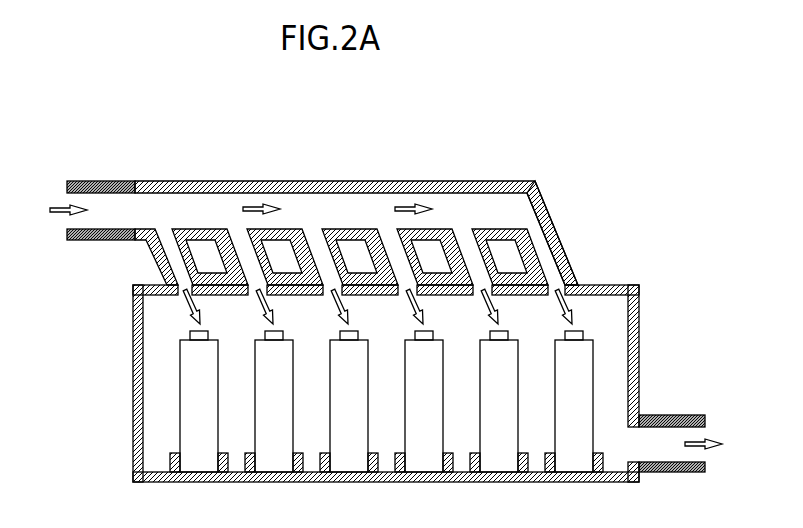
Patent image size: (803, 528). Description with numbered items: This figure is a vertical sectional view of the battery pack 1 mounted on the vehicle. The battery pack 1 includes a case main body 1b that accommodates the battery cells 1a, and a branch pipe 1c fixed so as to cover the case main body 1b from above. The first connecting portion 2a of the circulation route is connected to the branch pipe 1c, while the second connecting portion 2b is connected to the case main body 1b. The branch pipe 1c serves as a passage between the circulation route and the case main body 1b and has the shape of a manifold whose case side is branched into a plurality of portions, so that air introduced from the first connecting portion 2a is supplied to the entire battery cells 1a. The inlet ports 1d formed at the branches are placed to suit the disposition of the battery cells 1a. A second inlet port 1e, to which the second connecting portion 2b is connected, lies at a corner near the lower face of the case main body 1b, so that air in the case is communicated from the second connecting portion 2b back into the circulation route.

The battery pack 1 is at (672, 221).
The battery cells 1a is at (328, 380).
The case main body 1b is at (639, 313).
The branch pipe 1c is at (563, 248).
The inlet ports 1d is at (331, 284).
The second inlet port 1e is at (642, 446).
The first connecting portion 2a is at (116, 241).
The second connecting portion 2b is at (678, 414).